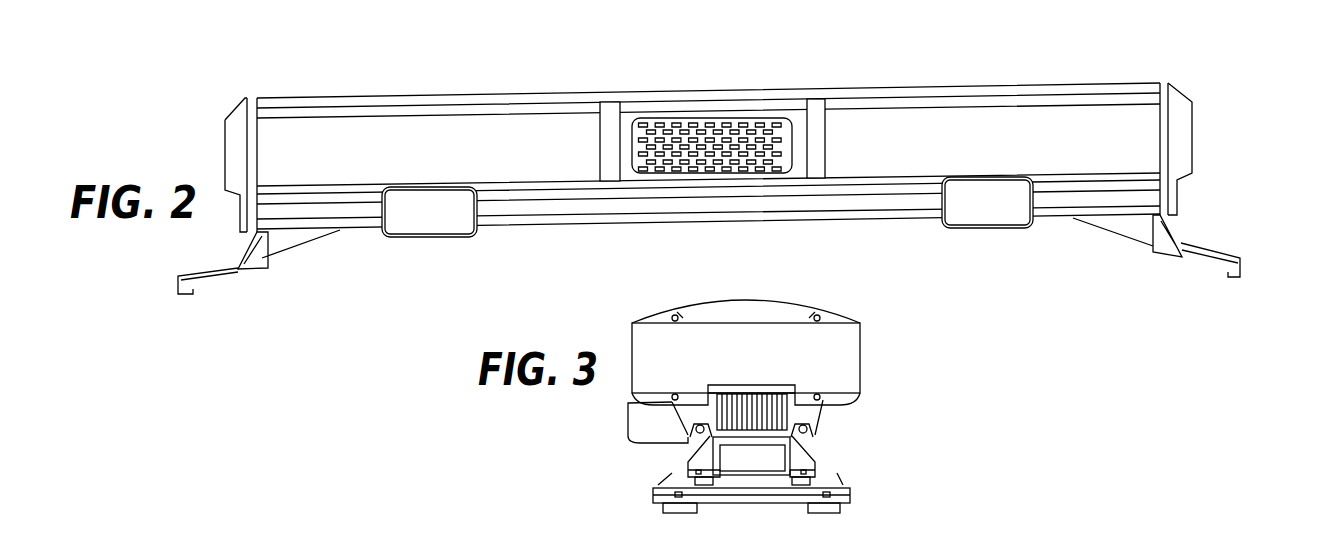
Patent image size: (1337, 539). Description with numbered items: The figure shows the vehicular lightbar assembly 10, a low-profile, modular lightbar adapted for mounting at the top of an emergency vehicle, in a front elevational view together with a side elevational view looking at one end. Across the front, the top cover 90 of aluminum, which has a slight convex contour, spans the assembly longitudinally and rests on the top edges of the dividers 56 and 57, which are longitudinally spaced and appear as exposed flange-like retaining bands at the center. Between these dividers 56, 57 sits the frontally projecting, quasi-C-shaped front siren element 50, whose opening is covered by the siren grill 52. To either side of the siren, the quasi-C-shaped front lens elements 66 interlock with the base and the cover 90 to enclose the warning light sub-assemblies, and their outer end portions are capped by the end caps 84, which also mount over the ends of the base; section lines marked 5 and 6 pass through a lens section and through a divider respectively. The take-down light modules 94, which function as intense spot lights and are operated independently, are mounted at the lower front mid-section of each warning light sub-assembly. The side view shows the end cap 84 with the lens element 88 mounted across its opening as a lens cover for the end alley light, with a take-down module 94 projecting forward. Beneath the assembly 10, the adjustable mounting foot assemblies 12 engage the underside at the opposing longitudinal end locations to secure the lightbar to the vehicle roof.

In FIG. 2, the vehicular lightbar assembly 10 is at (1212, 141).
In FIG. 2, the mounting foot assembly 12 is at (212, 272).
In FIG. 3, the mounting foot assembly 12 is at (815, 448).
In FIG. 2, the front siren element 50 is at (800, 122).
In FIG. 2, the siren grill 52 is at (724, 132).
In FIG. 2, the divider 56 is at (603, 110).
In FIG. 2, the divider 57 is at (820, 137).
In FIG. 2, the front lens element 66 is at (415, 137).
In FIG. 2, the end cap 84 is at (235, 145).
In FIG. 3, the end cap 84 is at (832, 350).
In FIG. 3, the lens element 88 is at (767, 415).
In FIG. 2, the top cover 90 is at (500, 100).
In FIG. 2, the take-down light module 94 is at (423, 213).
In FIG. 3, the take-down light module 94 is at (645, 422).
In FIG. 2, the section line 5- 5 is at (625, 93).
In FIG. 2, the section line 6- 6 is at (887, 88).